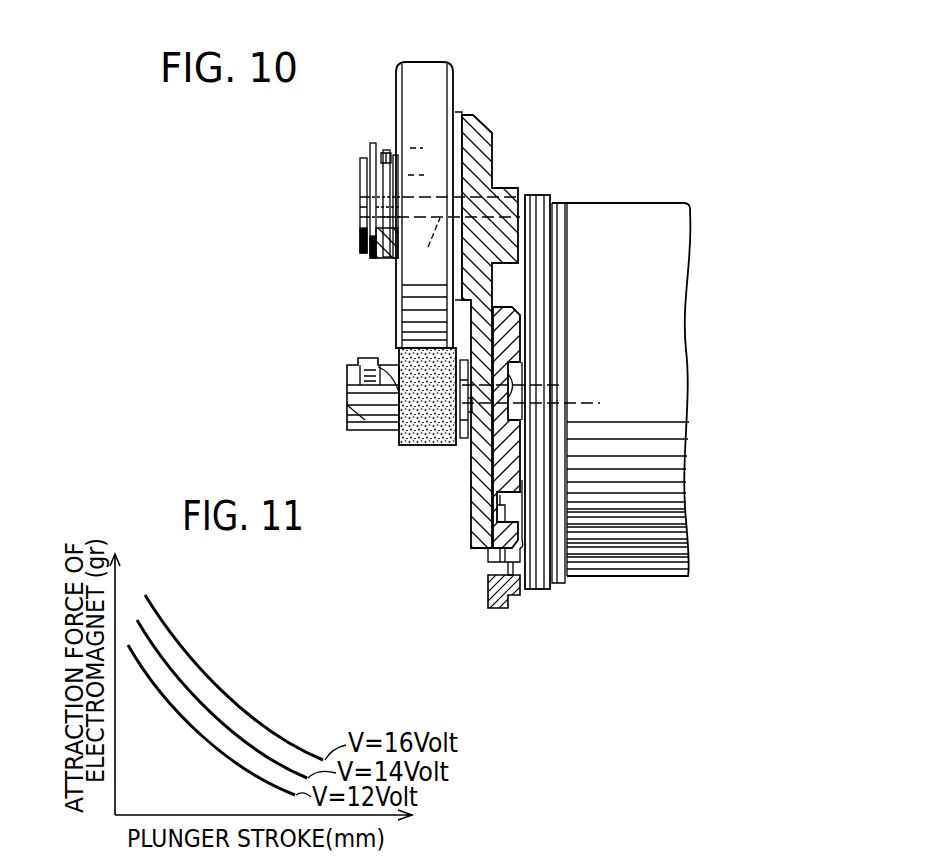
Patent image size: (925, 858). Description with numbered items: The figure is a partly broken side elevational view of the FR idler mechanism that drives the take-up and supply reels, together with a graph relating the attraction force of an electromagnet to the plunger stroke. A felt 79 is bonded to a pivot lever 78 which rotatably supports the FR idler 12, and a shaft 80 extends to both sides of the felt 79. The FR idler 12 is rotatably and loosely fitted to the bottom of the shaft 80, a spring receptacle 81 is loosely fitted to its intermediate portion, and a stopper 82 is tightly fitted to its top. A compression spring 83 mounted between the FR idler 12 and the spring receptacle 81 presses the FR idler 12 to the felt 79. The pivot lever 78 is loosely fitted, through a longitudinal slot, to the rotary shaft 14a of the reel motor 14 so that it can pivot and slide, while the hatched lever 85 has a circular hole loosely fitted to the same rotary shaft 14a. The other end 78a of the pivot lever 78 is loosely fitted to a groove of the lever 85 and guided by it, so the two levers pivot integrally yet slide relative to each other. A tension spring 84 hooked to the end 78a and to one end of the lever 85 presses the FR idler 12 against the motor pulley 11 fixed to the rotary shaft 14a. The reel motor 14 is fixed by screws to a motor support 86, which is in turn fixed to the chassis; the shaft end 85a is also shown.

The motor pulley 11 is at (369, 446).
The FR idler 12 is at (427, 64).
The reel motor 14 is at (652, 202).
The rotary shaft 14a is at (347, 400).
The pivot lever 78 is at (490, 131).
The other end of the pivot lever 78a is at (497, 484).
The felt 79 is at (455, 113).
The shaft 80 is at (422, 250).
The spring receptacle 81 is at (371, 143).
The stopper 82 is at (362, 160).
The compression spring 83 is at (386, 152).
The tension spring 84 is at (488, 556).
The lever 85 is at (522, 330).
The shaft end 85a is at (492, 592).
The motor support 86 is at (538, 195).